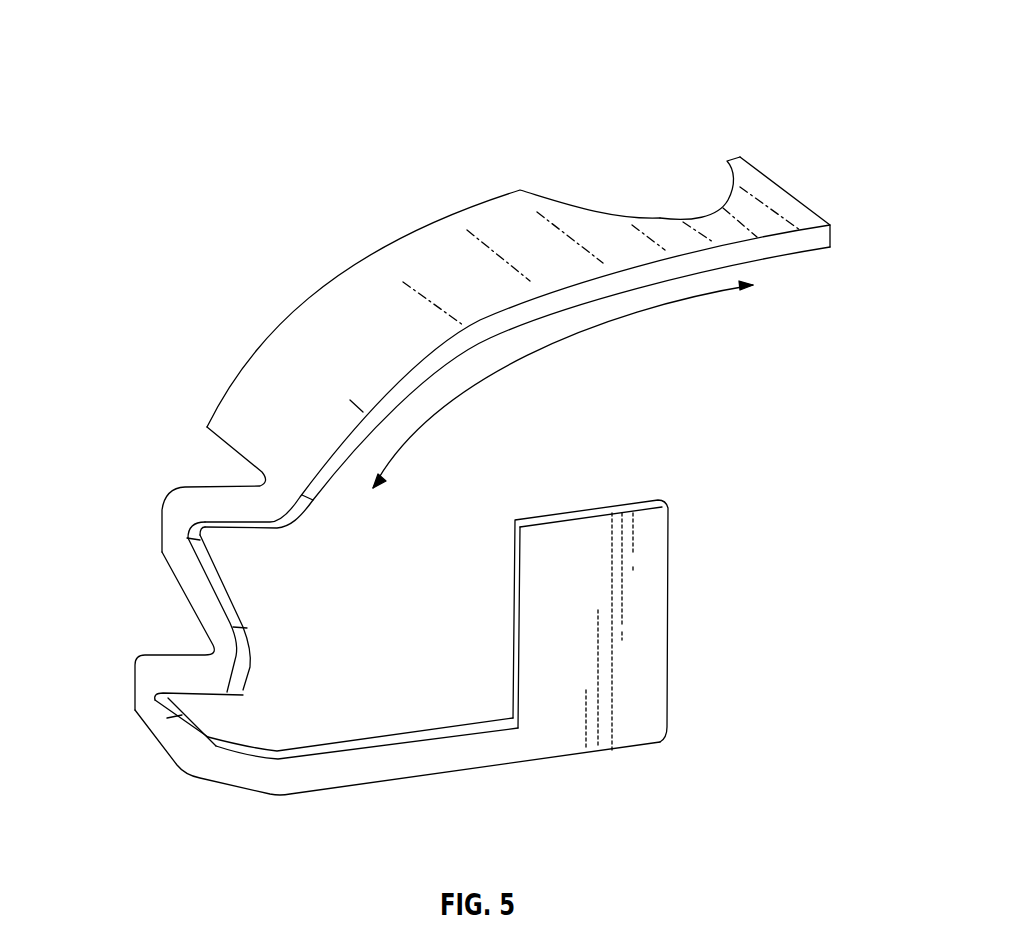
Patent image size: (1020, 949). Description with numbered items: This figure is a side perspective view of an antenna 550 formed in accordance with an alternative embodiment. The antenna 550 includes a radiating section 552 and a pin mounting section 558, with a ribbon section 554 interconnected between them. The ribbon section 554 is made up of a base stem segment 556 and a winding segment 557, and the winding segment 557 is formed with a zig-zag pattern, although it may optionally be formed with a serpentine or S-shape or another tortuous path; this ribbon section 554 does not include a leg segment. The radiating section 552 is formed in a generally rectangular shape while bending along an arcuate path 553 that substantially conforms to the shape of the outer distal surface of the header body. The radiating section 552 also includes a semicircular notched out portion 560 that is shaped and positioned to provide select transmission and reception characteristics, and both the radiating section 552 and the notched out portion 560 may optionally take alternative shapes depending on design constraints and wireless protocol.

The antenna 550 is at (170, 37).
The radiating section 552 is at (710, 128).
The arcuate path 553 is at (558, 332).
The ribbon section 554 is at (115, 422).
The base stem segment 556 is at (428, 733).
The winding segment 557 is at (205, 607).
The pin mounting section 558 is at (693, 508).
The notched out portion 560 is at (617, 213).